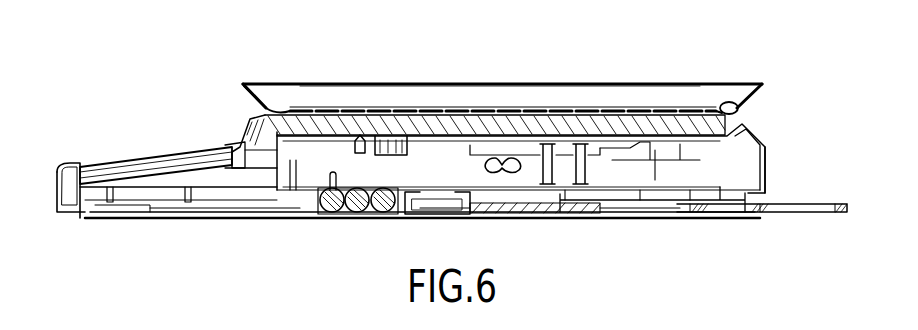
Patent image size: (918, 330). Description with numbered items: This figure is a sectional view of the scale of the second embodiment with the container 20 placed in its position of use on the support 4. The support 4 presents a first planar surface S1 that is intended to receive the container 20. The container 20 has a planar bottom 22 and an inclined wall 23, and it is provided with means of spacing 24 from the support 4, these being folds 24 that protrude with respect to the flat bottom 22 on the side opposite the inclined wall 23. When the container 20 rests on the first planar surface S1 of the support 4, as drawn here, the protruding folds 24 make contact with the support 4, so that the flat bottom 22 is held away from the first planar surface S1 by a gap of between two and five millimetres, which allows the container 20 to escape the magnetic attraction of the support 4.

The container 20 is at (697, 80).
The planar bottom 22 is at (392, 84).
The inclined wall 23 is at (243, 86).
The first planar surface S1 is at (545, 84).
The means of spacing (folds) 24 is at (742, 110).
The support 4 is at (768, 162).